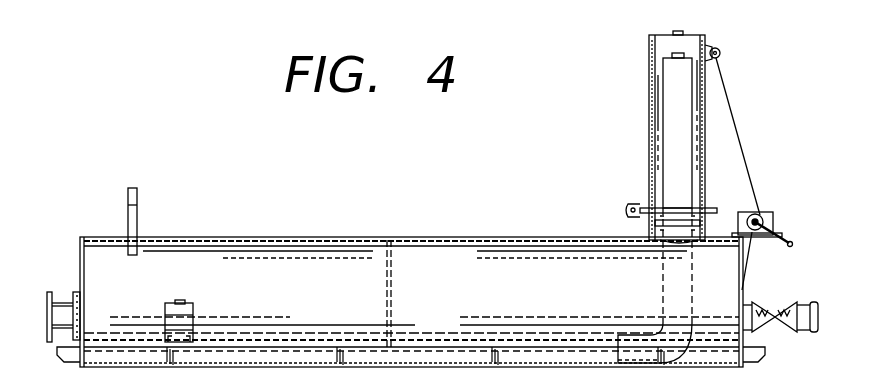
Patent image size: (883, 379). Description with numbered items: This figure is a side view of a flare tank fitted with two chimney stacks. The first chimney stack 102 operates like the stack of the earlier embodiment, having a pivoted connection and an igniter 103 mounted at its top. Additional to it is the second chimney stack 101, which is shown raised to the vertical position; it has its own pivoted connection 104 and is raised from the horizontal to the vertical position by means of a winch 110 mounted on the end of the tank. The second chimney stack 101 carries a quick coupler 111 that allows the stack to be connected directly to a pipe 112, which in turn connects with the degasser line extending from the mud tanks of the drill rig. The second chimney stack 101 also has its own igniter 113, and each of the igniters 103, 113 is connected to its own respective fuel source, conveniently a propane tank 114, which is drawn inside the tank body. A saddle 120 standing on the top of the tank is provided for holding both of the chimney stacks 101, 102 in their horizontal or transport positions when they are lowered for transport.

The second chimney stack 101 is at (655, 142).
The first chimney stack 102 is at (705, 112).
The igniter 103 is at (683, 31).
The pivoted connection 104 is at (628, 205).
The winch 110 is at (773, 218).
The quick coupler 111 is at (650, 228).
The pipe 112 is at (693, 285).
The igniter 113 is at (684, 55).
The propane tank 114 is at (185, 302).
The saddle 120 is at (128, 193).